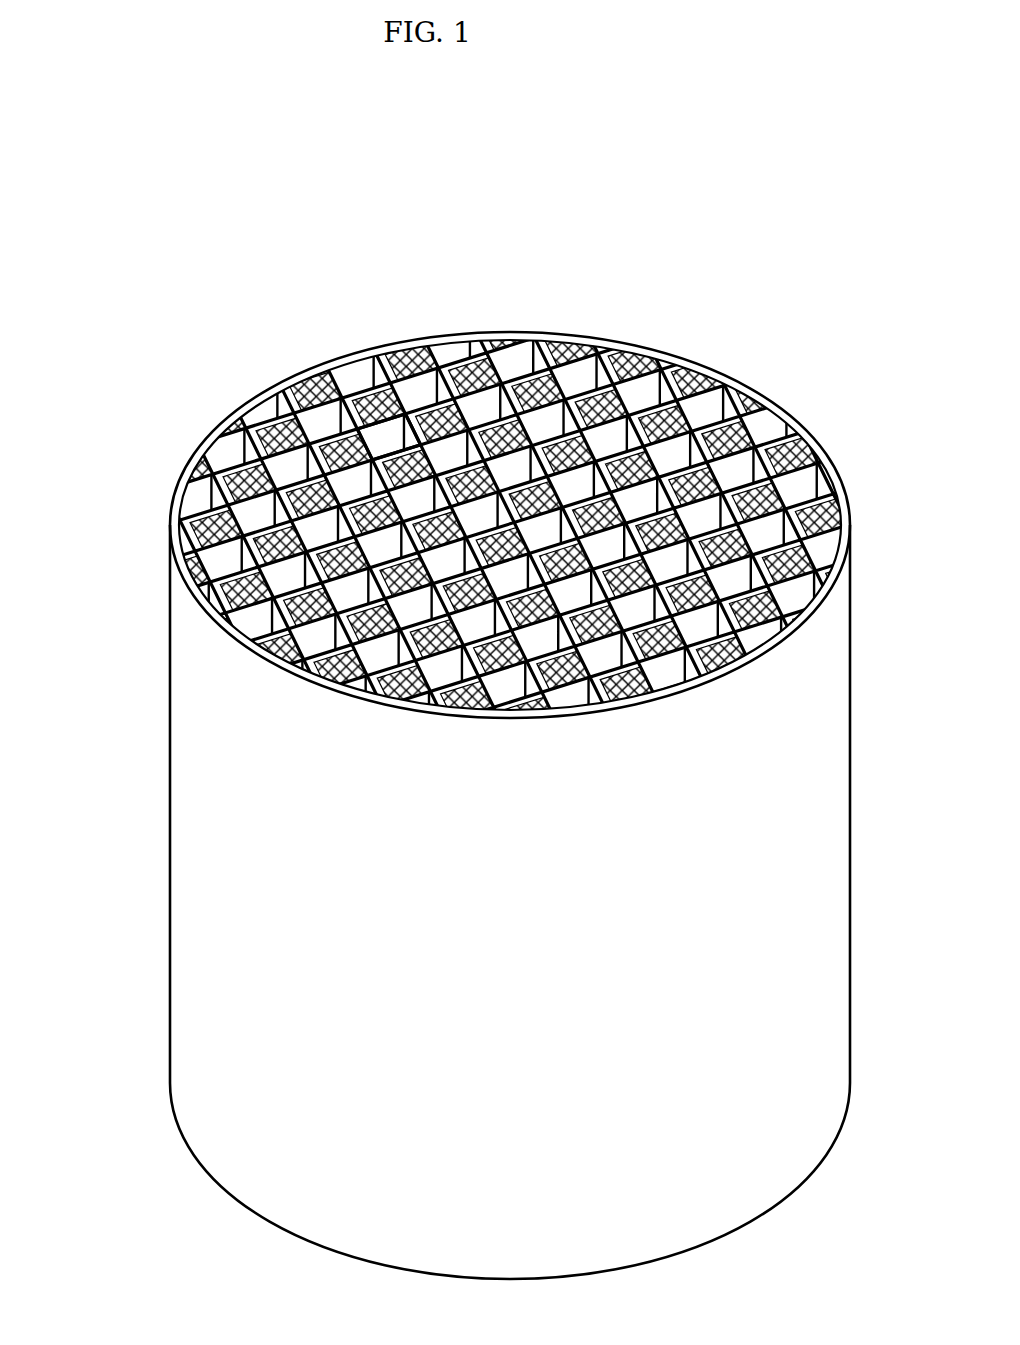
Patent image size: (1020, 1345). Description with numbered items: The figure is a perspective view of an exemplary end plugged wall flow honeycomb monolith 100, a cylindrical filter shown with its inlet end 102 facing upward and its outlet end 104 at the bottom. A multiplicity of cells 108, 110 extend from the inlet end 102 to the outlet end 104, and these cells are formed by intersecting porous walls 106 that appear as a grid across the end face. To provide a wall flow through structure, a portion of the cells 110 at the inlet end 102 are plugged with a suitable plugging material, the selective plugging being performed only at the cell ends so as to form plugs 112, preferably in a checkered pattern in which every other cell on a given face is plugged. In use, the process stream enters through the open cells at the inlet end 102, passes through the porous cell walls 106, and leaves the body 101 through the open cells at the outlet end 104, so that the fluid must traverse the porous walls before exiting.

The honeycomb monolith 100 is at (730, 348).
The body 101 is at (227, 530).
The inlet end 102 is at (785, 407).
The outlet end 104 is at (685, 1247).
The porous walls 106 is at (510, 576).
The cells 108 is at (519, 524).
The plugged cells 110 is at (529, 518).
The plugs 112 is at (388, 437).